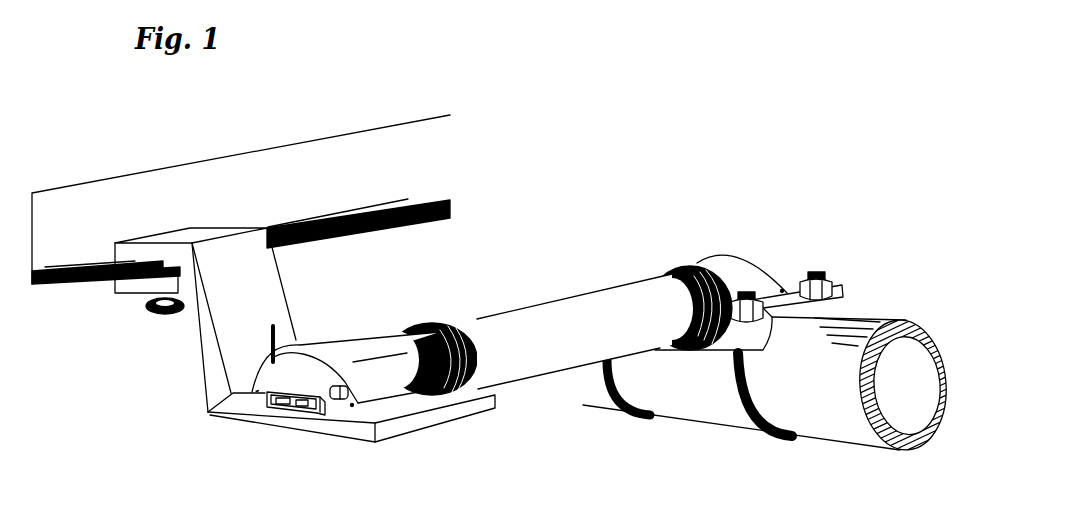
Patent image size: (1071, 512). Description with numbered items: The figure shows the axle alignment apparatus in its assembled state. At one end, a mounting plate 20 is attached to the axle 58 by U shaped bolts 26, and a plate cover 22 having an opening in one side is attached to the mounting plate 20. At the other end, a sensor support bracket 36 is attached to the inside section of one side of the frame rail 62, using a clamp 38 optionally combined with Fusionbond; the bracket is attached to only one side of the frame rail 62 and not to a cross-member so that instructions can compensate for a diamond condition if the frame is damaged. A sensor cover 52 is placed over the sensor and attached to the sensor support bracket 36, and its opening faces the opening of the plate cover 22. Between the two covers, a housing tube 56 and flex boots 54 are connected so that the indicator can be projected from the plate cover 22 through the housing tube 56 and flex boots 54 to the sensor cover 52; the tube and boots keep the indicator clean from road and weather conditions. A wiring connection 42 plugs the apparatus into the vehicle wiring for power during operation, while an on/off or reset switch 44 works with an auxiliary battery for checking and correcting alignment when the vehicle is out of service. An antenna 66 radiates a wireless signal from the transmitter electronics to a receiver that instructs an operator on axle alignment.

The frame rail 62 is at (110, 192).
The clamp 38 is at (138, 292).
The sensor support bracket 36 is at (208, 381).
The antenna 66 is at (278, 354).
The sensor cover 52 is at (373, 333).
The flex boots 54 is at (443, 325).
The housing tube 56 is at (585, 310).
The plate cover 22 is at (730, 265).
The mounting plate 20 is at (830, 303).
The axle 58 is at (847, 438).
The U shaped bolts 26 is at (750, 437).
The wiring connection 42 is at (320, 412).
The on/off or reset switch 44 is at (338, 401).